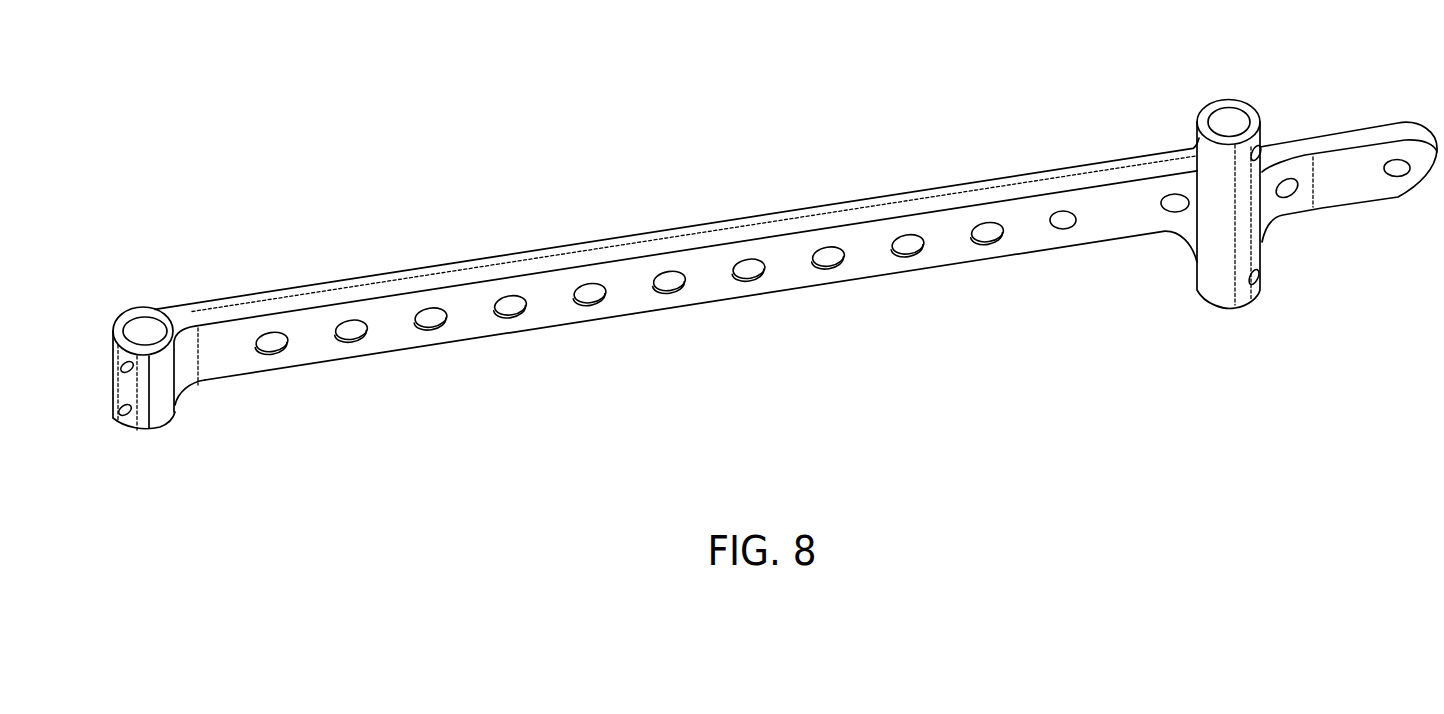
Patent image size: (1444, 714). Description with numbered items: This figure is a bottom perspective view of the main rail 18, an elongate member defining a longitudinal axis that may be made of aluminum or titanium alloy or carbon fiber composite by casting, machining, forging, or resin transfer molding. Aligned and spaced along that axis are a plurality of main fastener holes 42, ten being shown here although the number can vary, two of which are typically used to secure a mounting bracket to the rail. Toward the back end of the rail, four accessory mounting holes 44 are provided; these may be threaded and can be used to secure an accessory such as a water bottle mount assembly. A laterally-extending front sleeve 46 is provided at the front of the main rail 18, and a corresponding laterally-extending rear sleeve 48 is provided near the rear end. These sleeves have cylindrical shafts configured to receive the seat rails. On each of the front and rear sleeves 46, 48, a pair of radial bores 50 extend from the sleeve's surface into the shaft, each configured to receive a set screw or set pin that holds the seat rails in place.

The main rail 18 is at (650, 76).
The main fastener holes 42 is at (633, 327).
The accessory mounting holes 44 is at (1218, 177).
The front sleeve 46 is at (166, 392).
The rear sleeve 48 is at (1220, 192).
The radial bores 50 is at (689, 275).